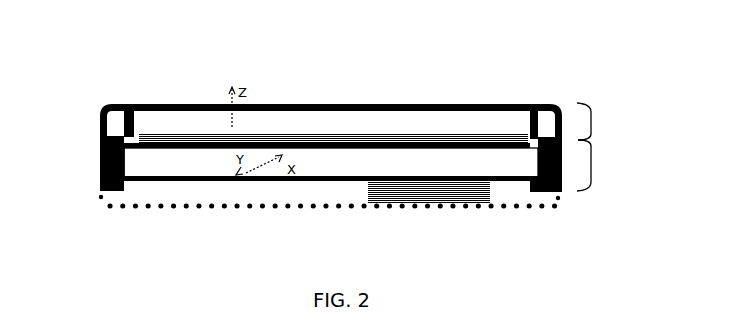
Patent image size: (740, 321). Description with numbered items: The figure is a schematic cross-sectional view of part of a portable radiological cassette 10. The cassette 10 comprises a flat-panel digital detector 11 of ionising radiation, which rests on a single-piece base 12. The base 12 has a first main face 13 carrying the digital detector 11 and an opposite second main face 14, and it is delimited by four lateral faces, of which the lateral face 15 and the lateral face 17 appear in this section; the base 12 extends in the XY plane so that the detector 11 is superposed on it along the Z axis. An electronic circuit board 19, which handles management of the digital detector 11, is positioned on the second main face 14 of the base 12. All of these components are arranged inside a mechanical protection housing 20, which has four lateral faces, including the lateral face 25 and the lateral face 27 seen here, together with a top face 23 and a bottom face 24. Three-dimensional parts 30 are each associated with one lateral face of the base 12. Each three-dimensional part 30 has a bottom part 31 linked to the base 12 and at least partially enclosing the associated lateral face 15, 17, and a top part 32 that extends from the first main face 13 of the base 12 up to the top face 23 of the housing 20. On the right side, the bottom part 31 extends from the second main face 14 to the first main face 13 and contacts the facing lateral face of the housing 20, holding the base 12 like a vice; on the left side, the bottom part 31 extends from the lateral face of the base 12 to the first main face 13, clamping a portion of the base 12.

The radiological cassette 10 is at (207, 25).
The digital detector 11 is at (168, 134).
The base 12 is at (328, 182).
The first main face 13 is at (467, 143).
The second main face 14 is at (190, 178).
The lateral face 15 is at (126, 158).
The lateral face 17 is at (535, 163).
The electronic circuit board 19 is at (452, 200).
The mechanical protection housing 20 is at (112, 104).
The top face 23 is at (279, 104).
The bottom face 24 is at (522, 208).
The lateral face 25 is at (100, 157).
The lateral face 27 is at (568, 181).
The three-dimensional part 30 is at (115, 130).
The bottom part 31 is at (592, 165).
The top part 32 is at (592, 120).